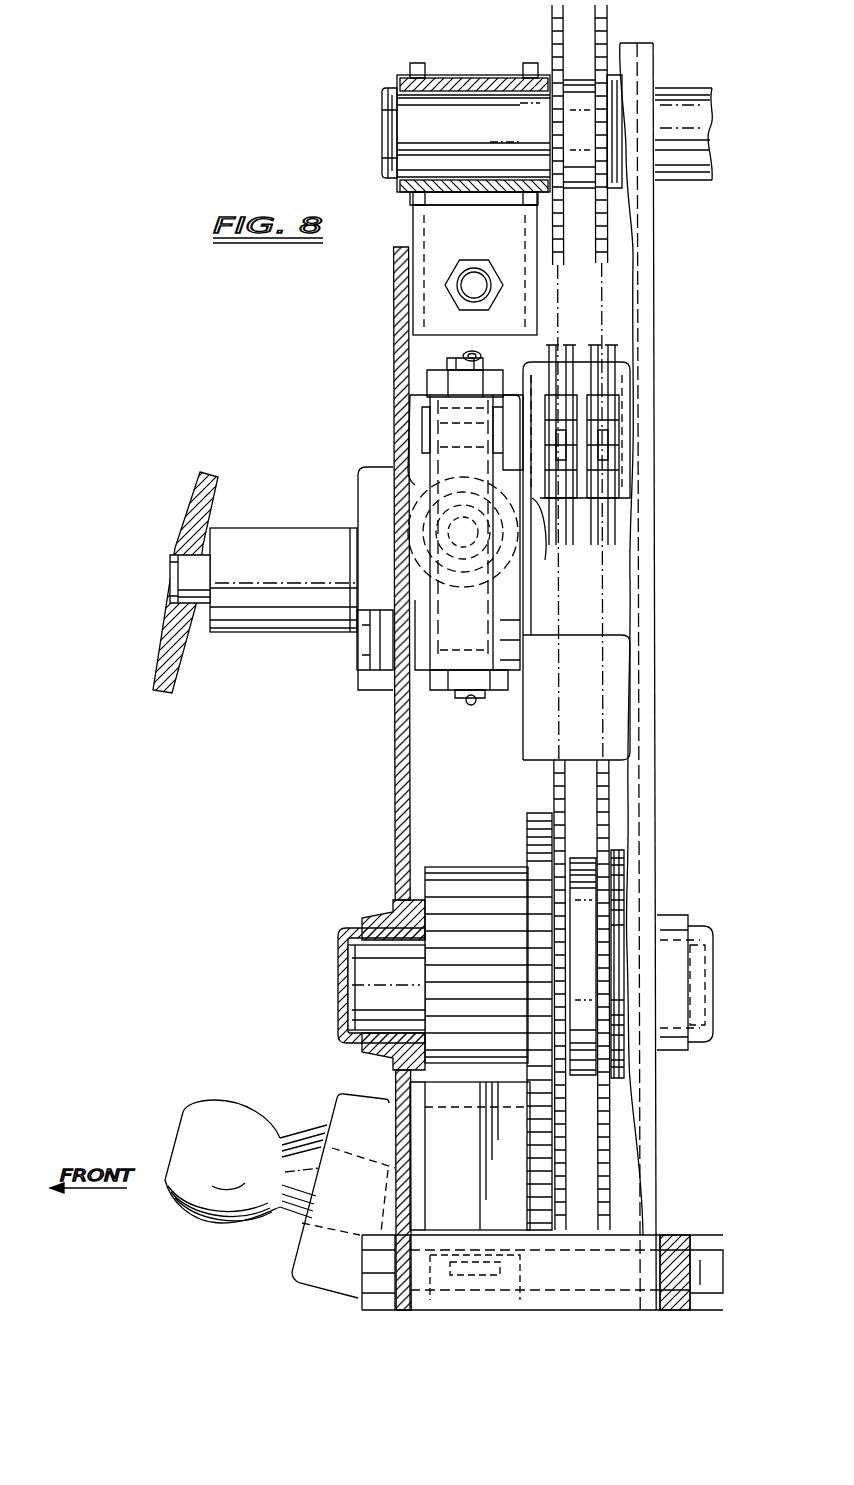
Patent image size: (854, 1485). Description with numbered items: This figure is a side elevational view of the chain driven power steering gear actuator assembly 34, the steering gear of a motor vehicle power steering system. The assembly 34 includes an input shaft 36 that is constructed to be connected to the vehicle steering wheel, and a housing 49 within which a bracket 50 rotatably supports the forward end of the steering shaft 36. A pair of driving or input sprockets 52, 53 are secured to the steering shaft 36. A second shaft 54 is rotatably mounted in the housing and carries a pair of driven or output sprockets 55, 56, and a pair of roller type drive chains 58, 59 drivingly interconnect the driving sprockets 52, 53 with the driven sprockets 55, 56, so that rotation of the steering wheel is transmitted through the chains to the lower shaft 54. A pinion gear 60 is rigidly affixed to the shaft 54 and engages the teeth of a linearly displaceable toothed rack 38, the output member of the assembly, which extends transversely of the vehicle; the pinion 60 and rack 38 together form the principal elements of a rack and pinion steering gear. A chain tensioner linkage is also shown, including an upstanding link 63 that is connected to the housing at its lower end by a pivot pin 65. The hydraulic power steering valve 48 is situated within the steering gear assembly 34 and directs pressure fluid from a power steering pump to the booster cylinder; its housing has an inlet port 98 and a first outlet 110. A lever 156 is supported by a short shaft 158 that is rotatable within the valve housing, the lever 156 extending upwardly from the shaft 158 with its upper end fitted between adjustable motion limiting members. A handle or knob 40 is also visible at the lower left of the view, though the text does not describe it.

The power steering gear actuator assembly 34 is at (667, 318).
The input shaft 36 is at (700, 128).
The toothed rack 38 is at (470, 1145).
The handle 40 is at (328, 1278).
The power steering valve 48 is at (356, 490).
The housing 49 is at (400, 800).
The bracket 50 is at (425, 222).
The driving sprocket 52 is at (552, 38).
The driving sprocket 53 is at (607, 30).
The shaft 54 is at (365, 983).
The driven sprocket 55 is at (556, 795).
The driven sprocket 56 is at (615, 830).
The drive chain 58 is at (568, 333).
The drive chain 59 is at (610, 297).
The pinion gear 60 is at (482, 862).
The upstanding link 63 is at (456, 662).
The pivot pin 65 is at (357, 647).
The inlet port 98 is at (471, 703).
The first outlet 110 is at (482, 366).
The lever 156 is at (172, 670).
The short shaft 158 is at (170, 582).